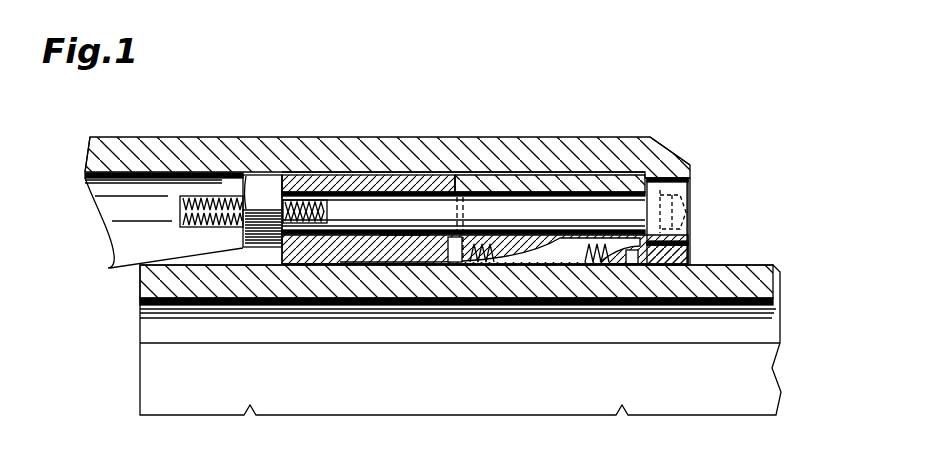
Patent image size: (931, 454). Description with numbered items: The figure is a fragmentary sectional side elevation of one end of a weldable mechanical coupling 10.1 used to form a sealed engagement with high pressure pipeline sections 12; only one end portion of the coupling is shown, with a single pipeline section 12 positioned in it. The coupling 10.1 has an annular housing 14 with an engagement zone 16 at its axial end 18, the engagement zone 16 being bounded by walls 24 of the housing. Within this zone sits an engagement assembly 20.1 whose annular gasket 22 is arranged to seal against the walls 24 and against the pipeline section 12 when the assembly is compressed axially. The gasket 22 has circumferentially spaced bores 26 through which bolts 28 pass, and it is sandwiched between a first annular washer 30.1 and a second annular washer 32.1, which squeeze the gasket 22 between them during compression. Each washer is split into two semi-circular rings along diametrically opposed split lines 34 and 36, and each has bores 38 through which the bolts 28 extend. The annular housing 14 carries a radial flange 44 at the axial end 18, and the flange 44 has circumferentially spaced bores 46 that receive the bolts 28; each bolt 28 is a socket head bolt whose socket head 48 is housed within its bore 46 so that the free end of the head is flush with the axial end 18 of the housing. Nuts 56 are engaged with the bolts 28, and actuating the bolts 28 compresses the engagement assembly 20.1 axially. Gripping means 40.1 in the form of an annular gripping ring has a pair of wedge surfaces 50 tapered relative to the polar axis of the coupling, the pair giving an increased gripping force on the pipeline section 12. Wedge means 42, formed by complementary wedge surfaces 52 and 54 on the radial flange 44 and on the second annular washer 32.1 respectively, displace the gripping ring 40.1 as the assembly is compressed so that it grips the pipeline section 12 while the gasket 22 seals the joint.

The weldable mechanical coupling 10.1 is at (519, 96).
The pipeline section 12 is at (760, 262).
The annular housing 14 is at (358, 133).
The engagement zone 16 is at (544, 174).
The axial end 18 is at (690, 180).
The engagement assembly 20.1 is at (542, 185).
The annular gasket 22 is at (368, 305).
The walls 24 is at (102, 190).
The bores 26 is at (394, 176).
The bolt 28 is at (204, 195).
The first annular washer 30.1 is at (287, 263).
The second annular washer 32.1 is at (375, 262).
The split line 34 is at (340, 172).
The split line 36 is at (476, 176).
The bores 38 is at (297, 175).
The gripping means 40.1 is at (535, 276).
The wedge means 42 is at (455, 245).
The radial flange 44 is at (610, 248).
The bores 46 is at (655, 150).
The socket head 48 is at (692, 192).
The wedge surfaces 50 is at (495, 250).
The wedge surface 52 is at (636, 268).
The wedge surface 54 is at (405, 266).
The nut 56 is at (110, 268).